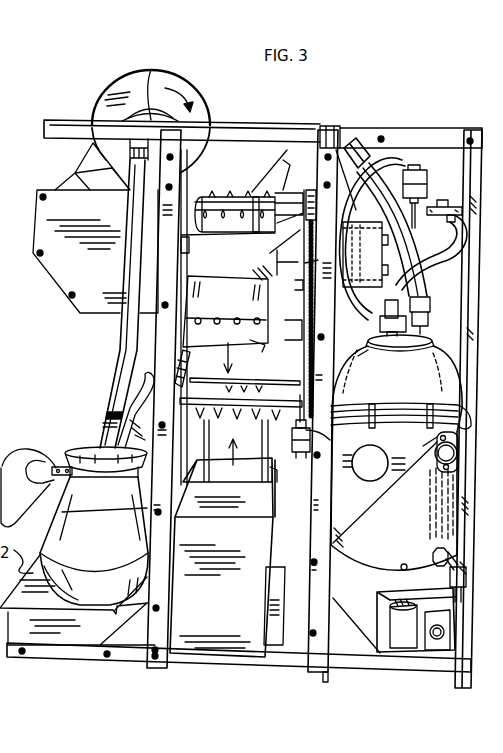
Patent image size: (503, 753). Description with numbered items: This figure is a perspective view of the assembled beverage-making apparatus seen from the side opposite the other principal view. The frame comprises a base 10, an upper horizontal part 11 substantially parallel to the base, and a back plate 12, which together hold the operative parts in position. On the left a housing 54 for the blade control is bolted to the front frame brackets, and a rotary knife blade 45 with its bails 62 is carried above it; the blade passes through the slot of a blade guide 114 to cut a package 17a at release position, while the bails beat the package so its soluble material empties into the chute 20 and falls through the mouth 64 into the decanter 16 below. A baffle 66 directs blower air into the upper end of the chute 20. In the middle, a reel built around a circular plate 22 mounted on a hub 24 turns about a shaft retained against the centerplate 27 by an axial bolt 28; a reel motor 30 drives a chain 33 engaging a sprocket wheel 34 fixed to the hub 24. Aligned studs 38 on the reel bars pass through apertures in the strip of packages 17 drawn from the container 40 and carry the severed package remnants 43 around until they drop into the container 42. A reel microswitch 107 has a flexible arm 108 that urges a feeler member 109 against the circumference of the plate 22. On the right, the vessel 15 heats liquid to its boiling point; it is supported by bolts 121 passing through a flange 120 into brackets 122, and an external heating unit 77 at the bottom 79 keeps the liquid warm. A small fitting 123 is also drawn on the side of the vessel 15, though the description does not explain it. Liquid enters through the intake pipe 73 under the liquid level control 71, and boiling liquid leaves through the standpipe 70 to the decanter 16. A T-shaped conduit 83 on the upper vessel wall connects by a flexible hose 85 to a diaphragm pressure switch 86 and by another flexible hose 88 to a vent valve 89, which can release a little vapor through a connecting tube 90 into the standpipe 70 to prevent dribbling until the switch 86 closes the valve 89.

The base 10 is at (82, 656).
The upper horizontal part 11 is at (397, 137).
The back plate 12 is at (470, 322).
The vessel 15 is at (452, 502).
The decanter 16 is at (112, 548).
The package 17 is at (228, 478).
The package at release position 17a is at (256, 197).
The chute 20 is at (230, 259).
The circular plate 22 is at (295, 243).
The hub 24 is at (302, 276).
The centerplate 27 is at (358, 356).
The axial bolt 28 is at (362, 292).
The reel motor 30 is at (366, 225).
The chain 33 is at (305, 263).
The sprocket wheel 34 is at (304, 330).
The studs 38 is at (242, 203).
The container 40 is at (270, 467).
The container 42 is at (230, 610).
The package remnants 43 is at (250, 340).
The rotary knife blade 45 is at (183, 80).
The blade control housing 54 is at (52, 282).
The bails 62 is at (150, 74).
The mouth 64 is at (118, 473).
The baffle 66 is at (322, 133).
The standpipe 70 is at (236, 126).
The liquid level control 71 is at (424, 304).
The intake pipe 73 is at (471, 584).
The external heating unit 77 is at (383, 596).
The bottom 79 is at (403, 564).
The T-shaped conduit 83 is at (373, 345).
The flexible hose 85 is at (452, 246).
The diaphragm pressure switch 86 is at (462, 202).
The flexible hose 88 is at (387, 307).
The vent valve 89 is at (427, 178).
The connecting tube 90 is at (441, 228).
The reel microswitch 107 is at (293, 452).
The flexible arm 108 is at (332, 439).
The feeler member 109 is at (302, 428).
The blade guide 114 is at (290, 165).
The flange 120 is at (398, 420).
The bolts 121 is at (373, 406).
The brackets 122 is at (373, 488).
The inlet fitting 123 is at (458, 457).